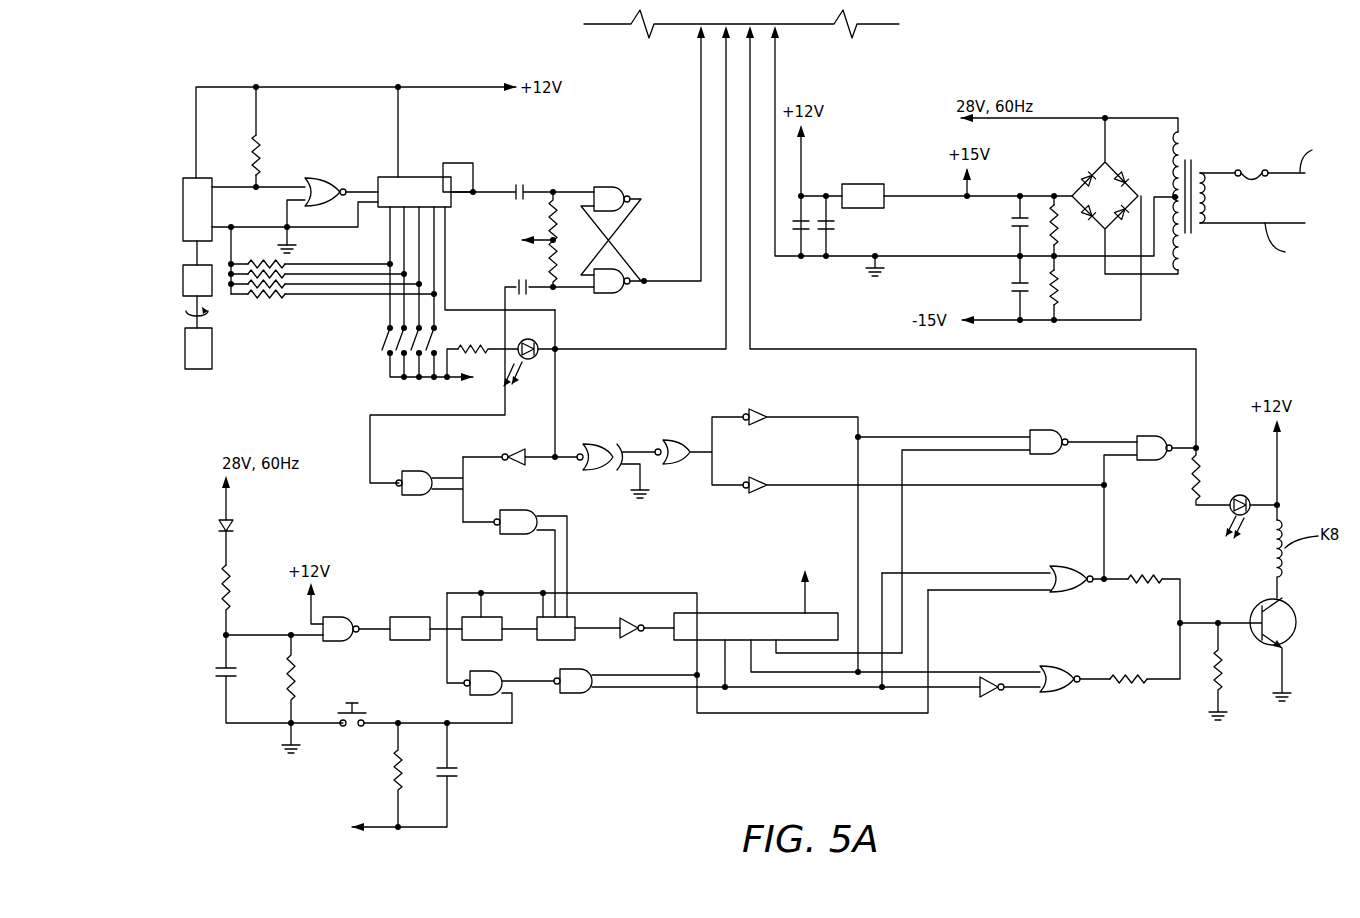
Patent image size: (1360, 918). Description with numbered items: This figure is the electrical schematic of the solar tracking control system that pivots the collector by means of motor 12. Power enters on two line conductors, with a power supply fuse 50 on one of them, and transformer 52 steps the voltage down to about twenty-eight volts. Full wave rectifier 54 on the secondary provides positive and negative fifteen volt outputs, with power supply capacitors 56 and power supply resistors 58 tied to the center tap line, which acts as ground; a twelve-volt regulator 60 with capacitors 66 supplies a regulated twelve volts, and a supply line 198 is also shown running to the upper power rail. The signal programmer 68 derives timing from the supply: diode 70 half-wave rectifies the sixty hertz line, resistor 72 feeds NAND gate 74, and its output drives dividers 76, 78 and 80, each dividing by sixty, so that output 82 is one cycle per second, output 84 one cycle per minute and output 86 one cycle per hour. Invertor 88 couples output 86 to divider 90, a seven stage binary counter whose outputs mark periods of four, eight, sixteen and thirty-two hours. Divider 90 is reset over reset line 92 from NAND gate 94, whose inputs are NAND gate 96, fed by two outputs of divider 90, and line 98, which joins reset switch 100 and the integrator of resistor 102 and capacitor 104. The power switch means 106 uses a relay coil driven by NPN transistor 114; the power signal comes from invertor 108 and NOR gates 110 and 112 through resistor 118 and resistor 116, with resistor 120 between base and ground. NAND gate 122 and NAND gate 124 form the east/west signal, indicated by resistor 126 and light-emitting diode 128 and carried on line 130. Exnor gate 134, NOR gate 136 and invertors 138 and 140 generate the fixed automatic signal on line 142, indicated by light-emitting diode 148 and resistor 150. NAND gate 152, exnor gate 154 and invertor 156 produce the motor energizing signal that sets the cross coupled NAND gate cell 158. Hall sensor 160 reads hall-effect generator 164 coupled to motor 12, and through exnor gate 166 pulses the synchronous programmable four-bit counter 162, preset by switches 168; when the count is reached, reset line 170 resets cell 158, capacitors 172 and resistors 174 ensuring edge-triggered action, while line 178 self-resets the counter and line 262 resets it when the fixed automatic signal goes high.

The motor 12 is at (185, 348).
The power supply fuse 50 is at (1250, 170).
The transformer 52 is at (1195, 150).
The full wave rectifier 54 is at (1078, 173).
The power supply capacitors 56 is at (1016, 228).
The power supply resistors 58 is at (1058, 228).
The 12-volt regulator 60 is at (862, 184).
The capacitors 66 is at (828, 232).
The signal programmer 68 is at (548, 762).
The diode 70 is at (216, 524).
The resistor 72 is at (214, 590).
The NAND gate 74 is at (338, 617).
The divider 76 is at (410, 617).
The divider 78 is at (495, 617).
The divider 80 is at (577, 617).
The output of divider 76 82 is at (440, 635).
The output of divider 78 84 is at (518, 640).
The output of divider 80 86 is at (585, 638).
The invertor 88 is at (628, 620).
The divider 90 is at (760, 613).
The reset line 92 is at (592, 593).
The NAND gate 94 is at (468, 695).
The NAND gate 96 is at (582, 694).
The line 98 is at (515, 712).
The reset switch 100 is at (344, 735).
The resistor 102 is at (395, 785).
The capacitor 104 is at (455, 782).
The power switch means 106 is at (1112, 735).
The invertor 108 is at (990, 700).
The NOR gate 110 is at (1052, 666).
The NOR gate 112 is at (1064, 566).
The NPN transistor 114 is at (1297, 616).
The resistor 116 is at (1140, 590).
The resistor 118 is at (1128, 692).
The resistor 120 is at (1222, 675).
The NAND gate 122 is at (1040, 430).
The NAND gate 124 is at (1150, 436).
The resistor 126 is at (1202, 475).
The light-emitting diode 128 is at (1232, 510).
The line 130 is at (790, 345).
The exnor gate 134 is at (592, 443).
The NOR gate 136 is at (676, 440).
The invertor 138 is at (753, 408).
The invertor 140 is at (758, 478).
The line 142 is at (655, 348).
The light-emitting diode 148 is at (540, 358).
The resistor 150 is at (490, 340).
The NAND gate 152 is at (420, 470).
The exnor gate 154 is at (498, 510).
The invertor 156 is at (520, 448).
The cross coupled NAND gate cell 158 is at (613, 175).
The hall sensor 160 is at (183, 212).
The synchronous programmable 4-bit counter 162 is at (392, 177).
The hall-effect generator 164 is at (183, 280).
The exnor gate 166 is at (322, 178).
The switches 168 is at (367, 358).
The reset line 170 is at (494, 192).
The capacitors 172 is at (530, 185).
The resistors 174 is at (548, 222).
The line 178 is at (462, 163).
The line 198 is at (780, 75).
The line 262 is at (556, 330).